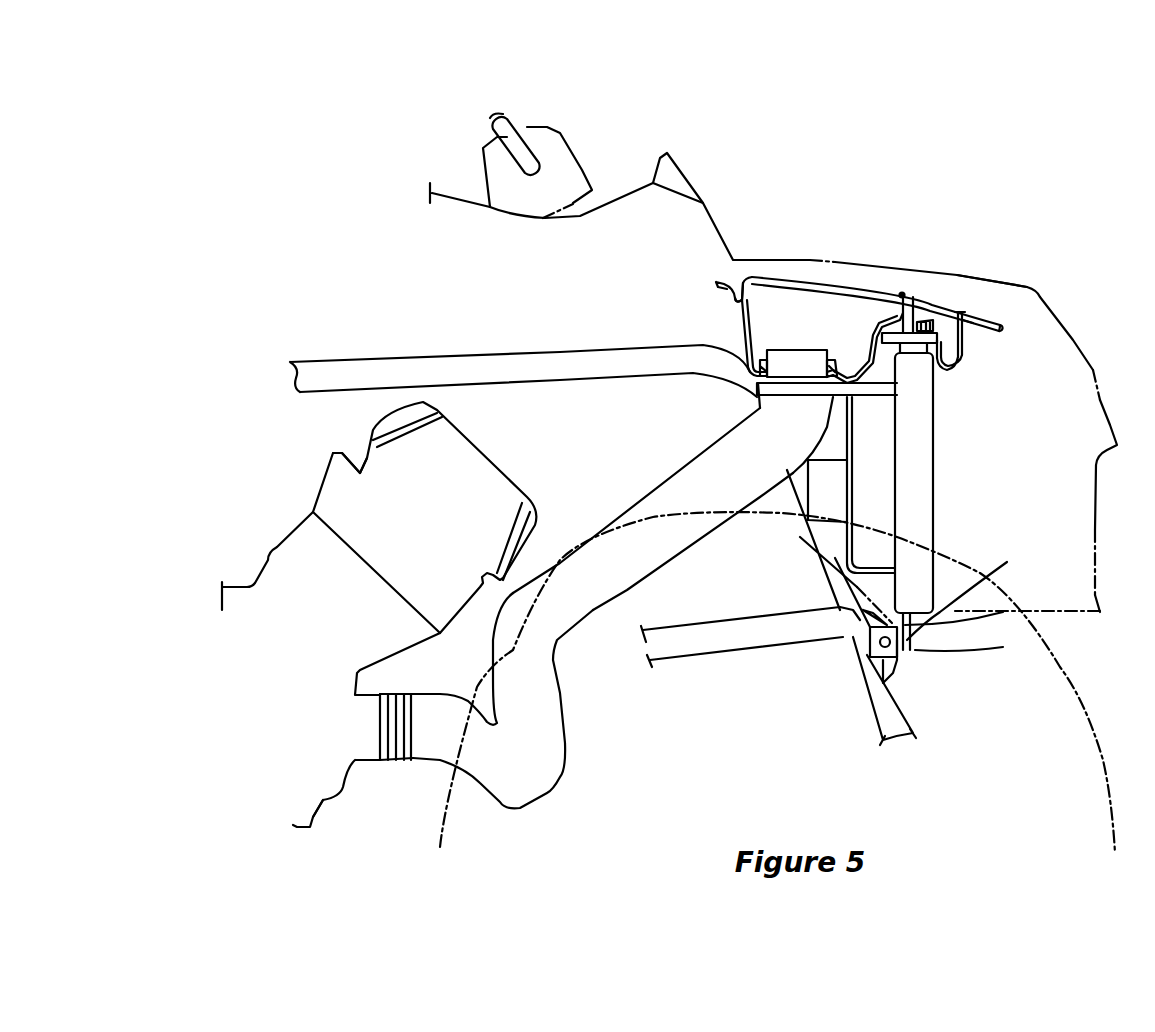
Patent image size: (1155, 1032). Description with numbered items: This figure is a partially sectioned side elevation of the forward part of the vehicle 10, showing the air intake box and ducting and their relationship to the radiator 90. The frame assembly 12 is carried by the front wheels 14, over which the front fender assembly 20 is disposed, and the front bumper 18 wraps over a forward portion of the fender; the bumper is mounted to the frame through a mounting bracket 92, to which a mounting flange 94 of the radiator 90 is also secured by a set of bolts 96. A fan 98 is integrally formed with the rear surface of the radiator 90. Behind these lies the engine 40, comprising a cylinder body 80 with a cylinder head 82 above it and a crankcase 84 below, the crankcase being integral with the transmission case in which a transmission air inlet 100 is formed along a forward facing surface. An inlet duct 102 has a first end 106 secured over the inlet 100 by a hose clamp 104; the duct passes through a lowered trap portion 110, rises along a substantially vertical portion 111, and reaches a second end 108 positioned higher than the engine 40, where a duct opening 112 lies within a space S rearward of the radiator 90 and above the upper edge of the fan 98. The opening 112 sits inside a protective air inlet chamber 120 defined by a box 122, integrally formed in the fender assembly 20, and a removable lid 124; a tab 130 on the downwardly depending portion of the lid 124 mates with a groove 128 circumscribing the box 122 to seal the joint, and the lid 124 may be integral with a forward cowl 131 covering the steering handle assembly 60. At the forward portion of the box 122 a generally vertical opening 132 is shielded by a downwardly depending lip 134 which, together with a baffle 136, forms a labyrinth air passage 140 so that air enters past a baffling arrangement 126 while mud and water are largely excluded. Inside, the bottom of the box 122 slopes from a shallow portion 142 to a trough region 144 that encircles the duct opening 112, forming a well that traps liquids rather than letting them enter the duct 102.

The vehicle 10 is at (760, 193).
The frame assembly 12 is at (583, 350).
The front wheels 14 is at (1097, 727).
The front bumper 18 is at (1003, 651).
The front fender assembly 20 is at (977, 288).
The engine 40 is at (300, 512).
The steering handle assembly 60 is at (531, 126).
The cylinder body 80 is at (280, 603).
The cylinder head 82 is at (353, 493).
The crankcase 84 is at (330, 800).
The radiator 90 is at (935, 488).
The mounting bracket 92 is at (882, 649).
The mounting flange 94 is at (966, 589).
The bolts 96 is at (913, 643).
The fan 98 is at (857, 555).
The transmission air inlet 100 is at (368, 748).
The inlet duct 102 is at (608, 523).
The hose clamp 104 is at (407, 693).
The first end 106 is at (418, 727).
The second end 108 is at (795, 428).
The trap portion 110 is at (503, 709).
The vertical portion 111 is at (478, 659).
The duct opening 112 is at (807, 364).
The air inlet chamber 120 is at (770, 313).
The box 122 is at (860, 393).
The lid 124 is at (867, 292).
The baffling arrangement 126 is at (932, 320).
The groove 128 is at (730, 293).
The tab 130 is at (736, 287).
The forward cowl 131 is at (685, 203).
The vertical opening 132 is at (933, 387).
The lip 134 is at (953, 363).
The baffle 136 is at (940, 327).
The labyrinth air passage 140 is at (993, 318).
The shallow portion 142 is at (903, 293).
The trough region 144 is at (827, 370).
The space S is at (801, 313).